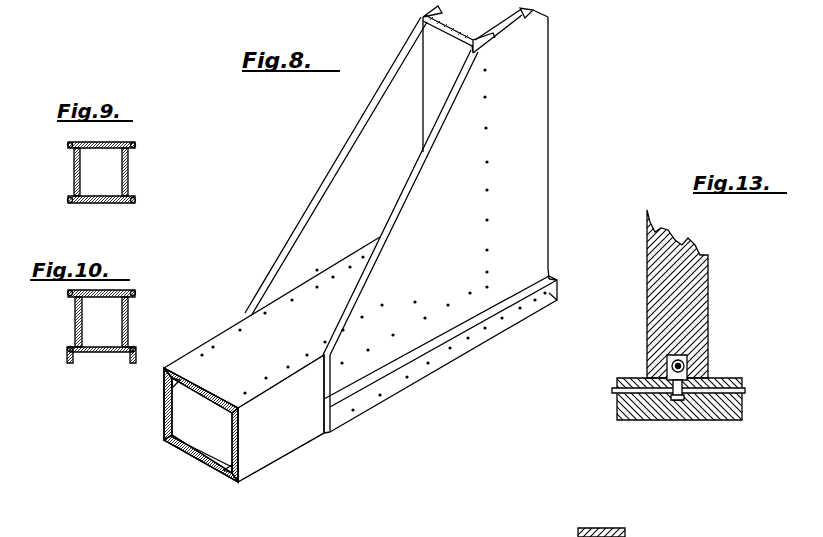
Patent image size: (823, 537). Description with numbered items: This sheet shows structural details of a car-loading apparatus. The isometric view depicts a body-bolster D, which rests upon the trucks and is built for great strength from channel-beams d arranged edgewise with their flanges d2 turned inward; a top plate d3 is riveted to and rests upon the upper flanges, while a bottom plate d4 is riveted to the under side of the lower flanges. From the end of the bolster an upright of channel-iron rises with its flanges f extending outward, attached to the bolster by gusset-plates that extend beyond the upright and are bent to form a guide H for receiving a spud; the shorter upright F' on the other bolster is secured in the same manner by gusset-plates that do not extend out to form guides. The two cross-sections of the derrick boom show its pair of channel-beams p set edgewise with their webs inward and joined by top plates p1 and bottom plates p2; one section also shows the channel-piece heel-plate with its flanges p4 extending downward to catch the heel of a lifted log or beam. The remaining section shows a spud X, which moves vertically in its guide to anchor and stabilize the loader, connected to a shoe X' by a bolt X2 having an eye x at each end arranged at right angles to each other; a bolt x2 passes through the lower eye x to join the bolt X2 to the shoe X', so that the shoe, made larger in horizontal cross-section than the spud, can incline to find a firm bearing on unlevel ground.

In FIG. 8, the body-bolster D is at (272, 359).
In FIG. 8, the channel-beam d is at (448, 210).
In FIG. 8, the flanges d2 is at (200, 487).
In FIG. 8, the top plate d3 is at (274, 331).
In FIG. 8, the bottom plate d4 is at (185, 455).
In FIG. 8, the upright F' is at (346, 166).
In FIG. 8, the flanges f is at (442, 12).
In FIG. 8, the guide H is at (548, 15).
In FIG. 9, the channel-beam p is at (74, 173).
In FIG. 10, the channel-beam p is at (82, 317).
In FIG. 9, the top plate p1 is at (120, 134).
In FIG. 10, the top plate p1 is at (120, 290).
In FIG. 9, the bottom plate p2 is at (107, 205).
In FIG. 10, the bottom plate p2 is at (100, 352).
In FIG. 10, the flanges p4 is at (135, 363).
In FIG. 13, the spud X is at (644, 294).
In FIG. 13, the shoe X' is at (686, 413).
In FIG. 13, the bolt X2 is at (667, 380).
In FIG. 13, the eye x is at (687, 363).
In FIG. 13, the bolt x2 is at (612, 393).